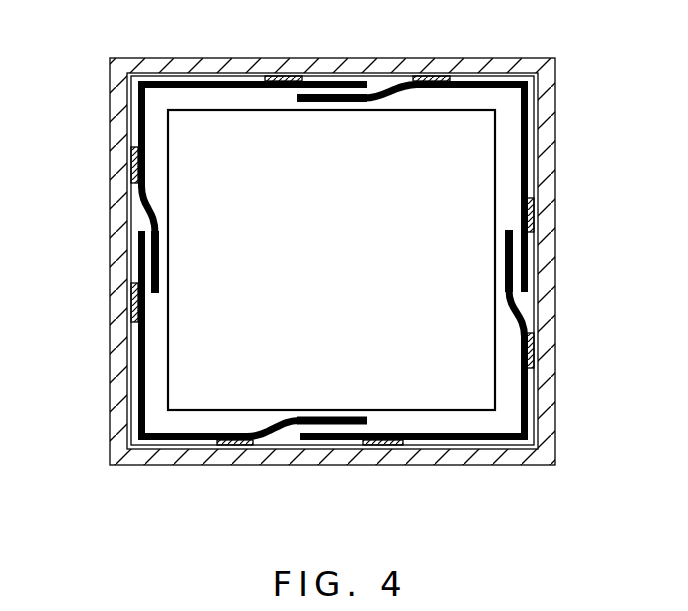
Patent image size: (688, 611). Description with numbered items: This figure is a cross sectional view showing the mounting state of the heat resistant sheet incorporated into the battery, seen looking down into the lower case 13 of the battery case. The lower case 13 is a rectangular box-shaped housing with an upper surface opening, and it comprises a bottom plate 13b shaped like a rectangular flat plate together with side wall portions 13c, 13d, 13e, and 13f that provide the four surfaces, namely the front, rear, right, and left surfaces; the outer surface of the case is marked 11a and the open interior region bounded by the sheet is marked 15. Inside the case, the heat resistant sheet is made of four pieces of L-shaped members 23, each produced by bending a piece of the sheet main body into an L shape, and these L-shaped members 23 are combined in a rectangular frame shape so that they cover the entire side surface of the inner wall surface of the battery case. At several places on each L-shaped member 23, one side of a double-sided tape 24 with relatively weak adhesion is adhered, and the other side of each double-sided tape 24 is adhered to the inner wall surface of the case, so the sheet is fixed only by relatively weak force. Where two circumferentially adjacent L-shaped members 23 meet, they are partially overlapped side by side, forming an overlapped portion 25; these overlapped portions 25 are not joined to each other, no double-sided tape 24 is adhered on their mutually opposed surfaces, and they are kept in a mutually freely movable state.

The package outer surface 11a is at (558, 112).
The lower case 13 is at (498, 72).
The bottom plate 13b is at (153, 105).
The side wall portion 13c is at (109, 357).
The side wall portion 13d is at (560, 242).
The side wall portion 13e is at (169, 466).
The side wall portion 13f is at (232, 66).
The cavity 15 is at (447, 390).
The L-shaped member 23 is at (168, 84).
The double-sided tape 24 is at (283, 77).
The overlapped portion 25 is at (318, 94).